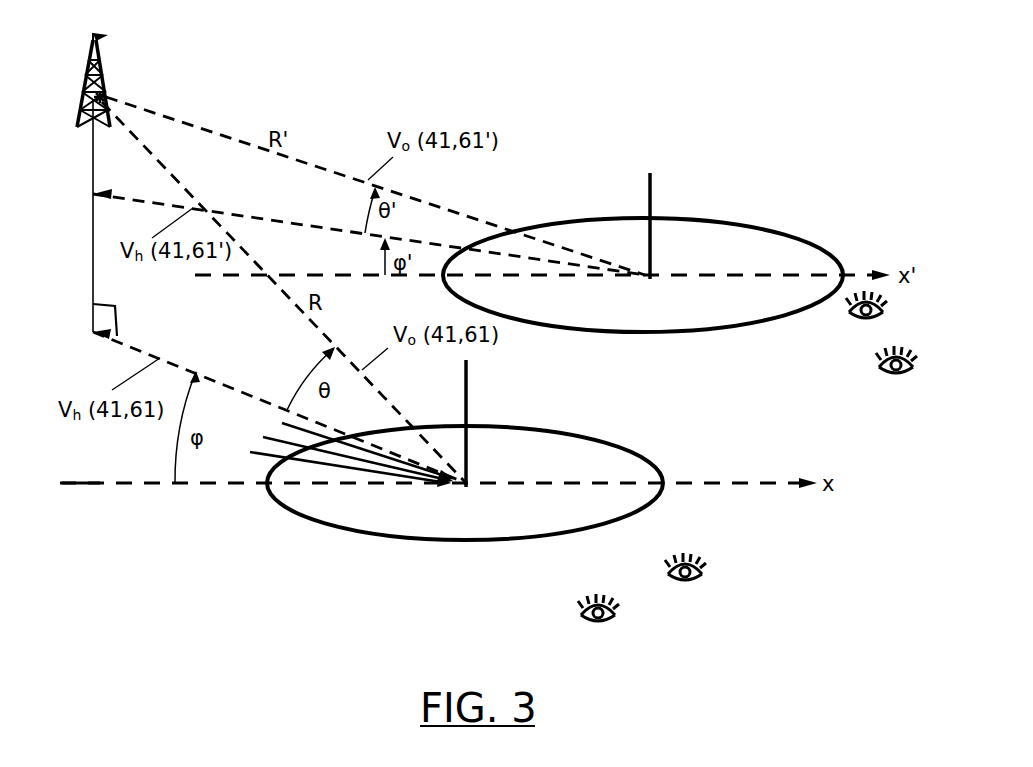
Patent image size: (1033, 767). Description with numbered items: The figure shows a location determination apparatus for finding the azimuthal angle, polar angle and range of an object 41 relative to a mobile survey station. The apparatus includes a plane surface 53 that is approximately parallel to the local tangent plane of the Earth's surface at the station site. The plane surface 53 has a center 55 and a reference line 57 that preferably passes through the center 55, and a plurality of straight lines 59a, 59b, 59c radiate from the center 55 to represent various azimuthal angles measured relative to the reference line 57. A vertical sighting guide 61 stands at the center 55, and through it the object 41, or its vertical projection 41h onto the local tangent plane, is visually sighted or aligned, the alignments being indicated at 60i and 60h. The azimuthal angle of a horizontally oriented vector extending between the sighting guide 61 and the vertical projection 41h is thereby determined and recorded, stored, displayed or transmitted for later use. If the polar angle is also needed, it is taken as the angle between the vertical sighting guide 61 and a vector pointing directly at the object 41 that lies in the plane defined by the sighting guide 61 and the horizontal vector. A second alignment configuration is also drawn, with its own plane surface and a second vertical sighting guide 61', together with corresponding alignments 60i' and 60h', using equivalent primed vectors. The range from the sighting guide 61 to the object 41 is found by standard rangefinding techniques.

The object 41 is at (98, 75).
The vertical projection of the object 41h is at (93, 331).
The plane surface 53 is at (745, 247).
The center 55 is at (470, 487).
The reference line 57 is at (112, 486).
The straight line 59a is at (355, 447).
The straight line 59b is at (344, 456).
The straight line 59c is at (337, 465).
The visual sighting or alignment 60h is at (716, 580).
The visual sighting or alignment 60i is at (633, 621).
The visual sighting or alignment 60h' is at (831, 317).
The visual sighting or alignment 60i' is at (865, 375).
The vertical sighting guide 61 is at (501, 423).
The vertical sighting guide 61' is at (686, 221).